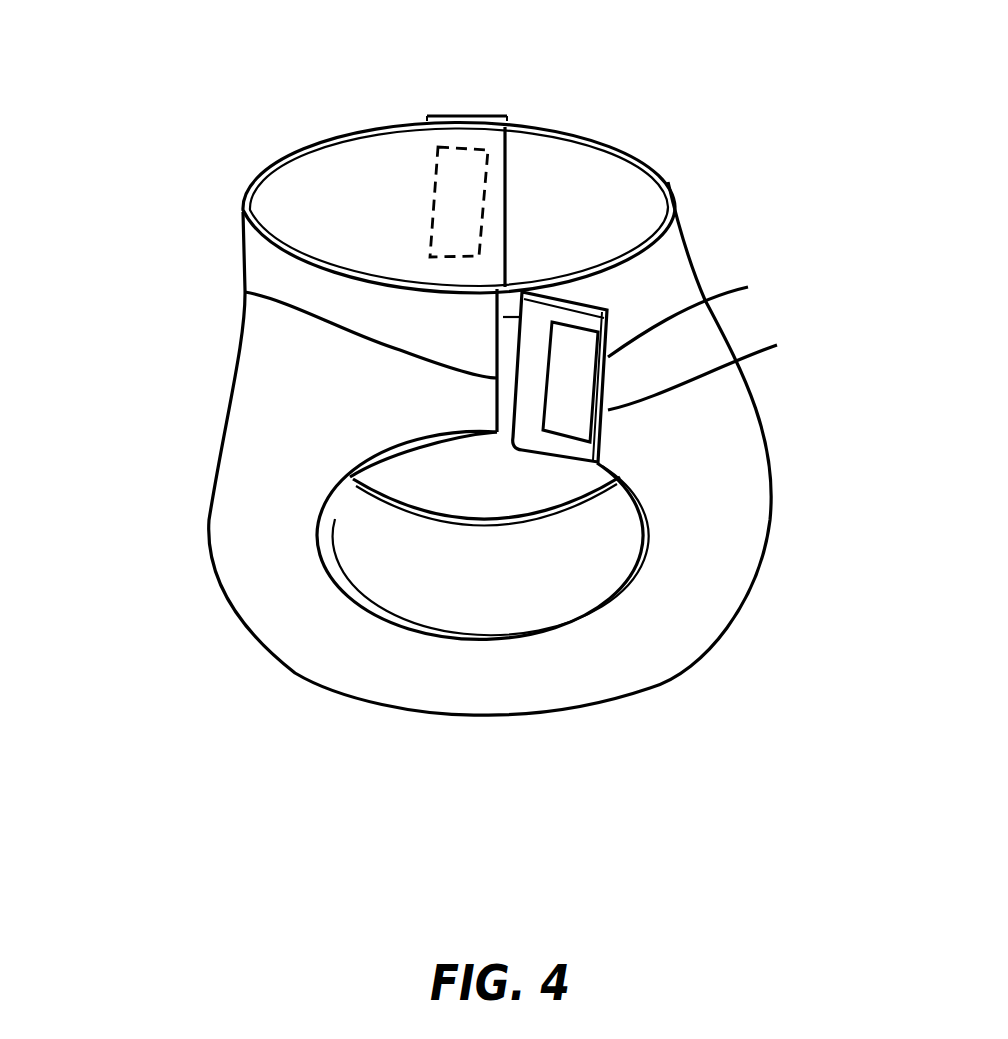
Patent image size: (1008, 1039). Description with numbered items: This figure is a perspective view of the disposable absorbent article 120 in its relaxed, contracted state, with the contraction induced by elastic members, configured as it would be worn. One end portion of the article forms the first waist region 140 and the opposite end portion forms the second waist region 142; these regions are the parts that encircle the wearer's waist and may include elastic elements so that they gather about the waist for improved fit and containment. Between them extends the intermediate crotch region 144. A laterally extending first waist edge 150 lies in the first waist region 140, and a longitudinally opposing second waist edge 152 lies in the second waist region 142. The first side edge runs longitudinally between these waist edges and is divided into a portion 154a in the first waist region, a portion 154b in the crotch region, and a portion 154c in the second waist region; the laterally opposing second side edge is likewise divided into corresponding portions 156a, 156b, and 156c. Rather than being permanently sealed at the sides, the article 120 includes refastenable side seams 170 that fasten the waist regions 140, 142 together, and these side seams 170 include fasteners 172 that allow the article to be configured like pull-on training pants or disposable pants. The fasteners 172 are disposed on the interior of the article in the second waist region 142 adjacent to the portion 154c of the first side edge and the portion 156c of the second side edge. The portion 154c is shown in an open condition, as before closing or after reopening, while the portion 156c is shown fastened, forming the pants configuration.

The disposable absorbent article 120 is at (118, 396).
The first waist region 140 is at (360, 265).
The second waist region 142 is at (554, 260).
The crotch region 144 is at (452, 627).
The first waist edge 150 is at (257, 175).
The second waist edge 152 is at (672, 178).
The portion of first side edge in first waist region 154a is at (245, 292).
The portion of first side edge in crotch region 154b is at (440, 635).
The portion of first side edge in second waist region 154c is at (717, 312).
The portion of second side edge in first waist region 156a is at (510, 157).
The portion of second side edge in crotch region 156b is at (510, 523).
The portion of second side edge in second waist region 156c is at (427, 122).
The refastenable side seam 170 is at (447, 103).
The fastener 172 is at (433, 222).